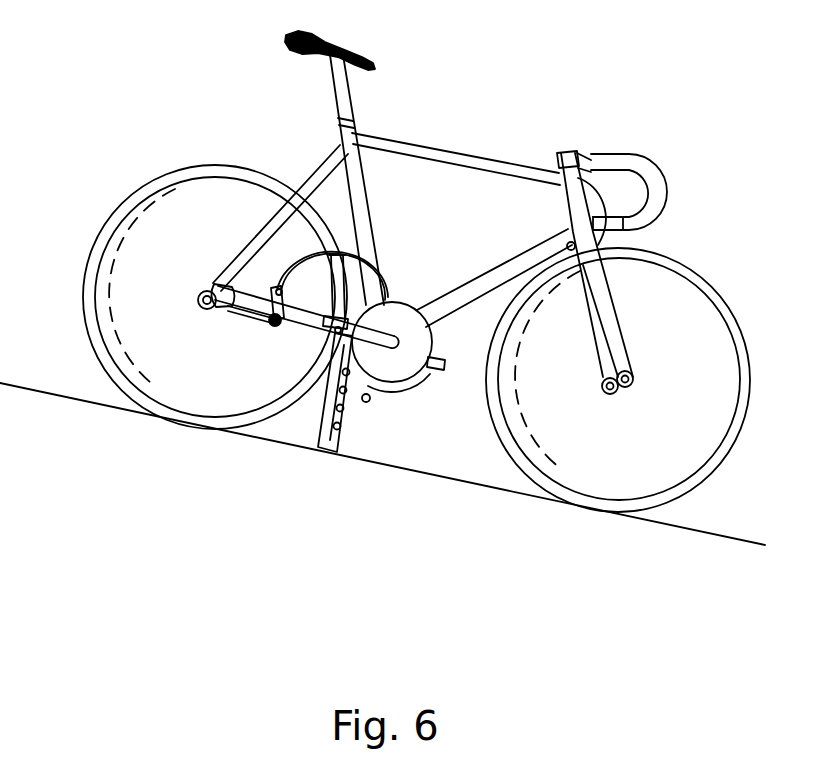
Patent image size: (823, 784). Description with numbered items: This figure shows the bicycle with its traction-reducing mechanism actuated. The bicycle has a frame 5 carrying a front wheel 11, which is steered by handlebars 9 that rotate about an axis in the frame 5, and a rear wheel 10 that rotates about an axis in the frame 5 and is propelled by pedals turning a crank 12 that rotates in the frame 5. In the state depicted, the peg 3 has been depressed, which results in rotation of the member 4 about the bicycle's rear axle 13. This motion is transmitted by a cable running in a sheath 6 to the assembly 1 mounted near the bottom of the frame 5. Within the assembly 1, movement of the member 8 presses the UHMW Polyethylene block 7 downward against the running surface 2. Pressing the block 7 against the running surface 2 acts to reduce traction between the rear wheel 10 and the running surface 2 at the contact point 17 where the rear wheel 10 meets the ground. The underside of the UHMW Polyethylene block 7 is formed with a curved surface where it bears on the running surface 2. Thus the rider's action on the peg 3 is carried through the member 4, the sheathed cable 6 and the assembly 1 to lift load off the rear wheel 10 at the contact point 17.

The assembly 1 is at (365, 398).
The running surface 2 is at (397, 470).
The peg 3 is at (282, 302).
The member 4 is at (250, 307).
The frame 5 is at (418, 150).
The sheath 6 is at (334, 255).
The UHMW Polyethylene block 7 is at (325, 457).
The member 8 is at (335, 328).
The handlebars 9 is at (643, 163).
The rear wheel 10 is at (150, 187).
The front wheel 11 is at (670, 268).
The crank 12 is at (378, 320).
The rear axle 13 is at (200, 294).
The contact point 17 is at (330, 323).